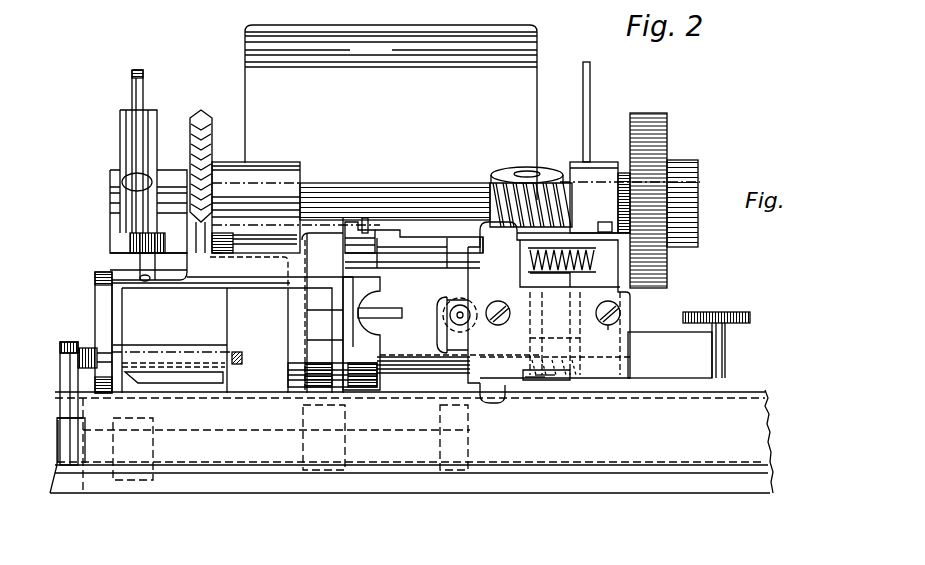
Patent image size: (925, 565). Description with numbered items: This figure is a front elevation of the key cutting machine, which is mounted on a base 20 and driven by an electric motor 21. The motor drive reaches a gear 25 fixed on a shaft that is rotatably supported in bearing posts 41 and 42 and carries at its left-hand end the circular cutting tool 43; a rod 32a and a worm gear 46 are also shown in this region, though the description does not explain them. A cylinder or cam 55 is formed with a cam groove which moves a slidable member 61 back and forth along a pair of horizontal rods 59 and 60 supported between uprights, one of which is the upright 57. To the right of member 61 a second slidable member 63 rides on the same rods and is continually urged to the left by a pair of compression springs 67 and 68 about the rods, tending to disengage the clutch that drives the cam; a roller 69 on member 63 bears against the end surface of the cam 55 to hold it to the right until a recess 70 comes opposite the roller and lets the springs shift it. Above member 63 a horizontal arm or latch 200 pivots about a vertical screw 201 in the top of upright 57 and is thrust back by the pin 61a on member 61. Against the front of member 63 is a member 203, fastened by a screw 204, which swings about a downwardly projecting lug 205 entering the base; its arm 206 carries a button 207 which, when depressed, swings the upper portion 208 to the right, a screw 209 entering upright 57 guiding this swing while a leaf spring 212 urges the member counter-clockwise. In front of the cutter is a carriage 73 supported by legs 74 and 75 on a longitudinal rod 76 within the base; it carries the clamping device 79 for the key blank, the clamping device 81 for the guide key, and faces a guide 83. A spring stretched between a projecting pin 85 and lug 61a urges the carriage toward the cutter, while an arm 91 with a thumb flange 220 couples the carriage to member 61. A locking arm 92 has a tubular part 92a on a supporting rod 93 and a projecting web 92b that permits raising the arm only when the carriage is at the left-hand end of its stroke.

The base 20 is at (748, 478).
The electric motor 21 is at (391, 112).
The gear 25 is at (660, 127).
The rod 32a is at (592, 92).
The bearing post 41 is at (592, 173).
The bearing post 42 is at (278, 162).
The circular cutting tool 43 is at (201, 112).
The worm gear 46 is at (552, 170).
The cylinder (cam) 55 is at (430, 247).
The upright 57 is at (615, 265).
The horizontal rod 59 is at (412, 247).
The horizontal rod 60 is at (413, 370).
The slidable member 61 is at (370, 370).
The upright lug (pin) 61a is at (366, 218).
The second slidable member 63 is at (476, 383).
The compression spring 67 is at (578, 248).
The compression spring 68 is at (598, 314).
The roller 69 is at (452, 300).
The recess 70 is at (440, 338).
The carriage 73 is at (270, 267).
The leg 74 is at (122, 316).
The leg 75 is at (337, 340).
The longitudinal shaft or rod 76 is at (237, 450).
The clamping device 79 is at (120, 180).
The clamping device 81 is at (112, 229).
The guide 83 is at (213, 253).
The projecting pin 85 is at (350, 222).
The arm 91 is at (353, 317).
The arm 92 is at (95, 278).
The tubular part 92a is at (120, 392).
The projecting flange or web 92b is at (182, 380).
The supporting rod 93 is at (86, 348).
The horizontal arm (latch) 200 is at (450, 238).
The vertical screw 201 is at (605, 222).
The member 203 is at (525, 377).
The screw 204 is at (501, 325).
The downwardly projecting lug 205 is at (500, 387).
The arm 206 is at (682, 363).
The button 207 is at (752, 318).
The upper portion 208 is at (508, 173).
The screw 209 is at (607, 327).
The leaf spring 212 is at (535, 375).
The projecting flange 220 is at (388, 308).